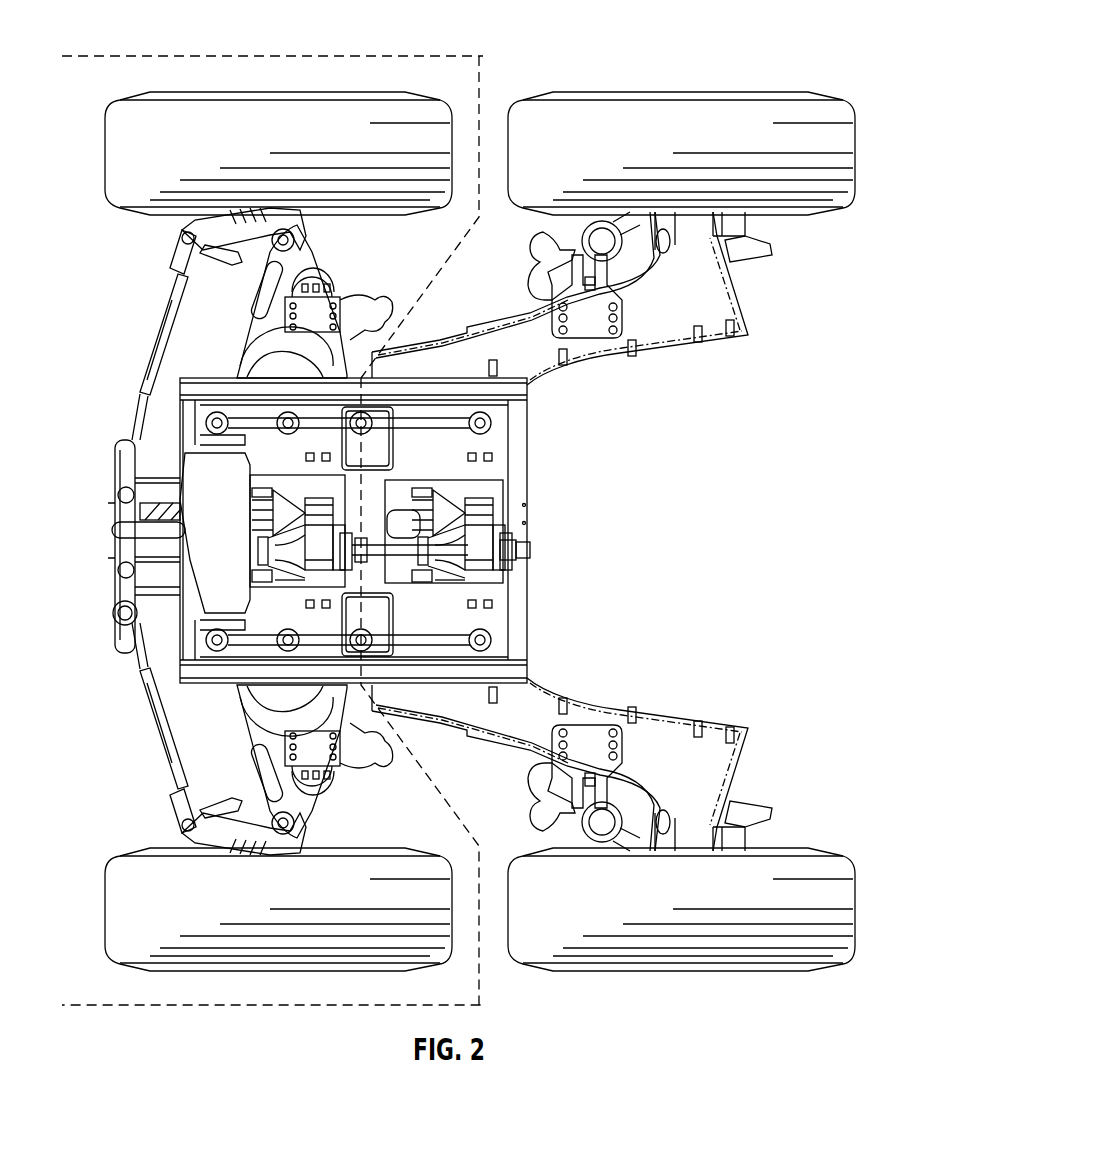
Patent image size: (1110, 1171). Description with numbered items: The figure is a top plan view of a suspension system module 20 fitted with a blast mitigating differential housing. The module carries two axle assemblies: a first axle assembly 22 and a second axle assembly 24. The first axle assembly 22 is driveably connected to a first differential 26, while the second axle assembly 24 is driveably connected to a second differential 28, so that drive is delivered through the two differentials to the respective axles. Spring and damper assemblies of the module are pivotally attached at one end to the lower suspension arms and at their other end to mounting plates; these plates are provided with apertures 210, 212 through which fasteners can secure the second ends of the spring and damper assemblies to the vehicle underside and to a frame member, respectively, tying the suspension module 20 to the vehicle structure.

The suspension system module 20 is at (700, 420).
The first axle assembly 22 is at (151, 311).
The second axle assembly 24 is at (722, 38).
The first differential 26 is at (322, 578).
The second differential 28 is at (485, 550).
The aperture 210 is at (340, 307).
The aperture 212 is at (340, 765).